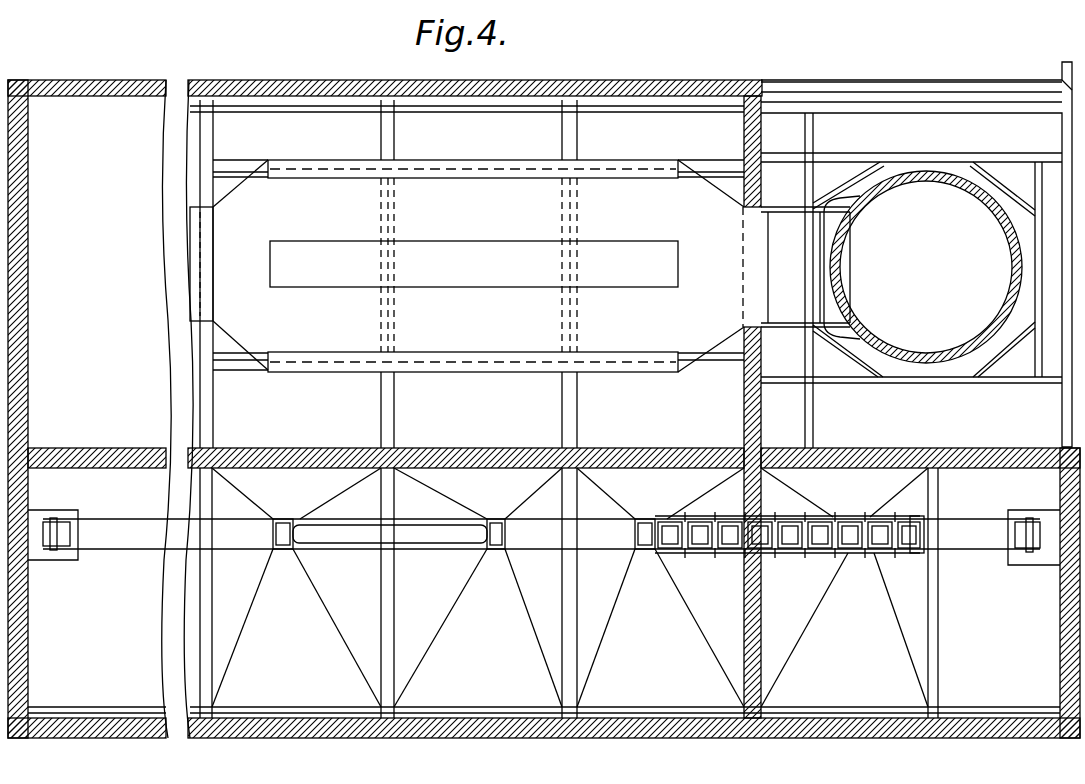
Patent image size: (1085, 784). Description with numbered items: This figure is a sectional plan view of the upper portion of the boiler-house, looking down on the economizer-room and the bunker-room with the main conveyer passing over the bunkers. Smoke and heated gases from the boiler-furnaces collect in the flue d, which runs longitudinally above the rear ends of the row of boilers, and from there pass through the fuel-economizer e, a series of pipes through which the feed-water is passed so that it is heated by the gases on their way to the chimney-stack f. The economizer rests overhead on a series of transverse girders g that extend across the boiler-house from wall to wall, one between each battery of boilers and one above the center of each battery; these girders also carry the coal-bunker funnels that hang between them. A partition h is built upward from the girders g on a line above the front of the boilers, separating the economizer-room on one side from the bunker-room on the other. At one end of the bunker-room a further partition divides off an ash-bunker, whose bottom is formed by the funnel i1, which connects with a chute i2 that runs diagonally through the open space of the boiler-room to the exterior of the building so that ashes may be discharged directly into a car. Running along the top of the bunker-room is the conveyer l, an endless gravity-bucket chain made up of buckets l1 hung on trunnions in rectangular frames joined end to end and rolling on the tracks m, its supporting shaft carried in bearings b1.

The flue d is at (196, 296).
The fuel-economizer e is at (478, 266).
The chimney-stack f is at (926, 267).
The transverse girders g is at (213, 400).
The partition h is at (308, 448).
The shaft bearing b1 is at (465, 560).
The conveyer l is at (438, 545).
The tracks m is at (506, 524).
The buckets l1 is at (797, 548).
The funnel i1 is at (846, 556).
The chute i2 is at (912, 525).